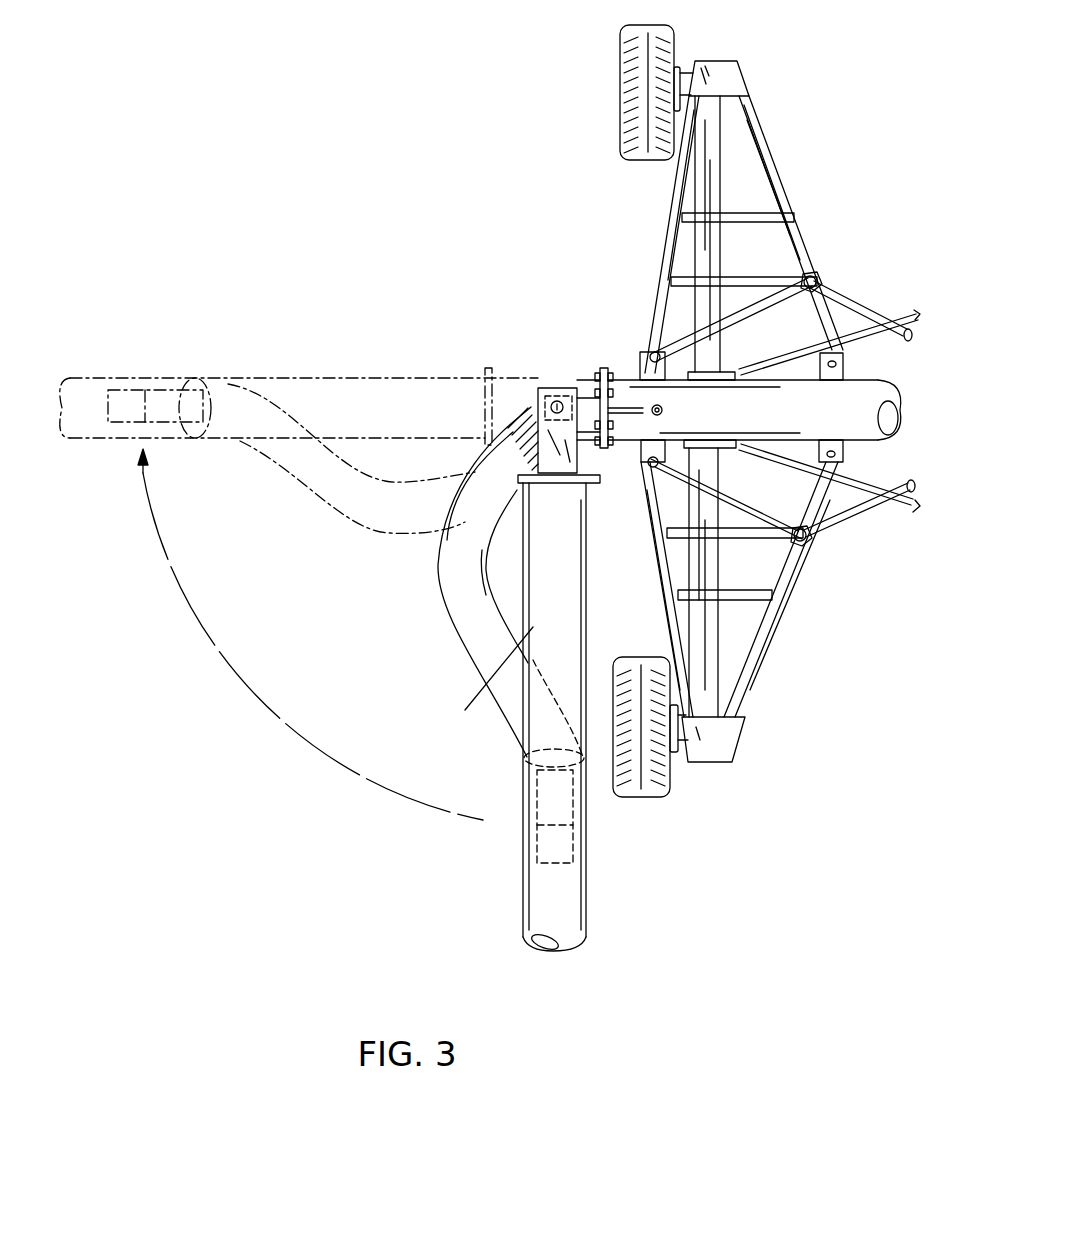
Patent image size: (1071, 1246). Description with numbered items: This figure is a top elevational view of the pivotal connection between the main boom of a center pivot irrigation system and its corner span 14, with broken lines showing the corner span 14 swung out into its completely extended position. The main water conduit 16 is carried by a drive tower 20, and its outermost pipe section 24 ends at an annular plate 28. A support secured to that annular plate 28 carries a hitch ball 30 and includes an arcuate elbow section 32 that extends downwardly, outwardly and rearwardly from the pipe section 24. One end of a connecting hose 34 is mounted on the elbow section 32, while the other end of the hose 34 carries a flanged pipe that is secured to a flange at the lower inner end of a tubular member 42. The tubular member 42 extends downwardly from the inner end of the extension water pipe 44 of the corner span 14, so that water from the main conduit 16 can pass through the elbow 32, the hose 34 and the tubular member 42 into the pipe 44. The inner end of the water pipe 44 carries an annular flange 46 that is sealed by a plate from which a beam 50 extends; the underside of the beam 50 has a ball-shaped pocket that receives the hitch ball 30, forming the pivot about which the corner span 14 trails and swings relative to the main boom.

The corner span 14 is at (498, 853).
The main water conduit 16 is at (873, 296).
The drive tower 20 is at (765, 632).
The outermost pipe section 24 is at (826, 421).
The annular plate 28 is at (603, 410).
The hitch ball 30 is at (552, 383).
The elbow section 32 is at (483, 422).
The connecting hose 34 is at (467, 623).
The tubular member 42 is at (557, 813).
The extension water pipe 44 is at (352, 385).
The annular flange 46 is at (597, 483).
The beam 50 is at (573, 402).